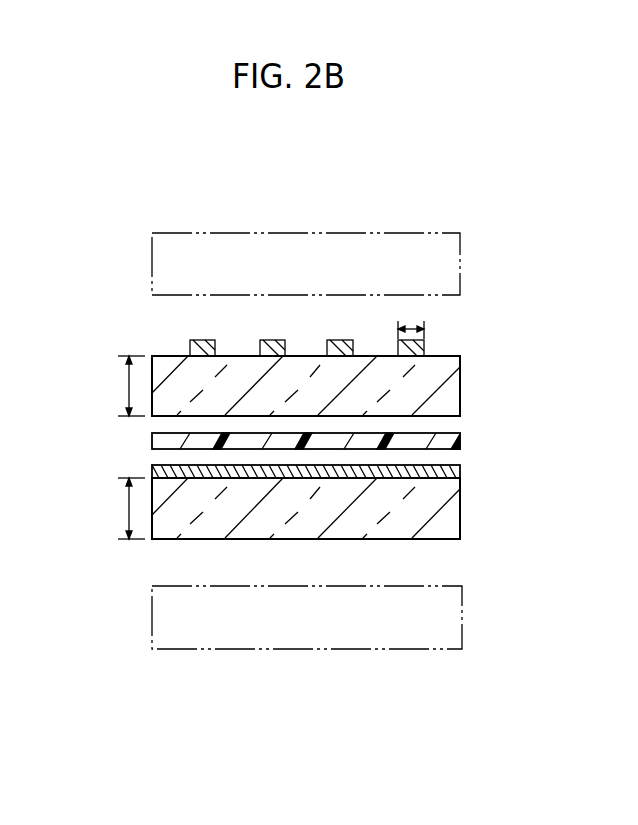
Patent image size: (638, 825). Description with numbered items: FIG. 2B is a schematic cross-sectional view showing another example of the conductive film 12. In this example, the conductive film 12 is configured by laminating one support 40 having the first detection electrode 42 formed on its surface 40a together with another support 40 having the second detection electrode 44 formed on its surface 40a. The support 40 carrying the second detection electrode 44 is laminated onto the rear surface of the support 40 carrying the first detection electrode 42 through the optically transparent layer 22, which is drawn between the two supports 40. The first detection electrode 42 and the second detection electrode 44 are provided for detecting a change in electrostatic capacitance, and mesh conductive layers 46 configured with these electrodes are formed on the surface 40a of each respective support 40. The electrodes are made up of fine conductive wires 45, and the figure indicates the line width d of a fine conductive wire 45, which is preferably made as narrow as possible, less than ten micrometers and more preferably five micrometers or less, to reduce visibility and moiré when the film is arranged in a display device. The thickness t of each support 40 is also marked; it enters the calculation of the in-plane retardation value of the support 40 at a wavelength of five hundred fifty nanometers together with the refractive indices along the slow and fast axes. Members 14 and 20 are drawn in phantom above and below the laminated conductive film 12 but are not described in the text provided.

The conductive film 12 is at (482, 336).
The upper member (phantom) 14 is at (438, 232).
The lower member (phantom) 20 is at (463, 620).
The optically transparent layer 22 is at (162, 444).
The support 40 is at (461, 381).
The surface 40a is at (152, 356).
The first detection electrode 42 is at (197, 341).
The second detection electrode 44 is at (165, 466).
The fine conductive wire 45 is at (426, 346).
The mesh conductive layer 46 is at (225, 334).
The line width d is at (411, 320).
The thickness t is at (125, 447).